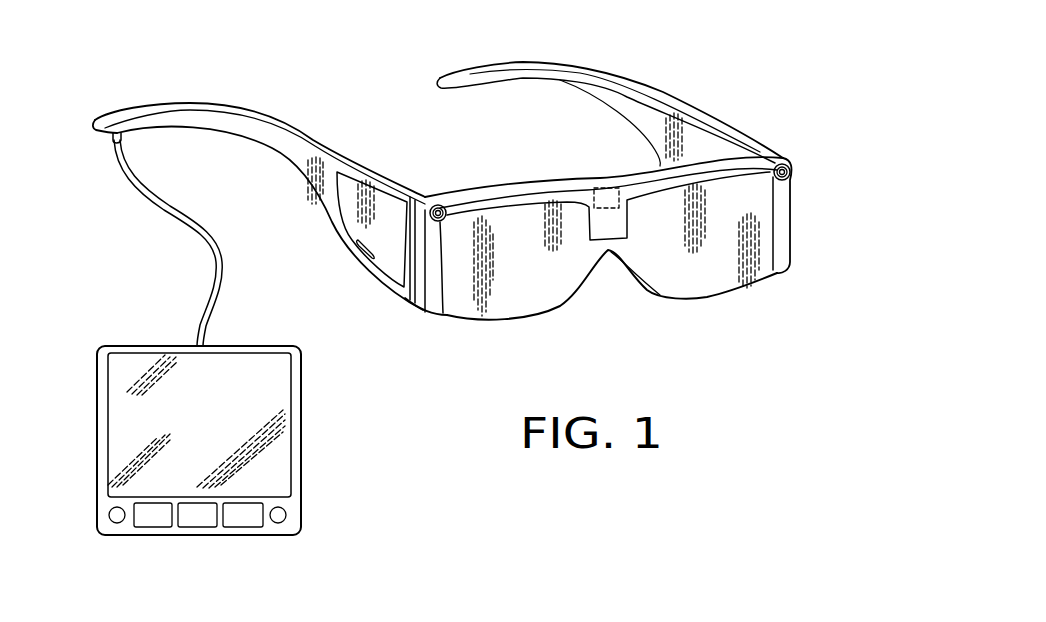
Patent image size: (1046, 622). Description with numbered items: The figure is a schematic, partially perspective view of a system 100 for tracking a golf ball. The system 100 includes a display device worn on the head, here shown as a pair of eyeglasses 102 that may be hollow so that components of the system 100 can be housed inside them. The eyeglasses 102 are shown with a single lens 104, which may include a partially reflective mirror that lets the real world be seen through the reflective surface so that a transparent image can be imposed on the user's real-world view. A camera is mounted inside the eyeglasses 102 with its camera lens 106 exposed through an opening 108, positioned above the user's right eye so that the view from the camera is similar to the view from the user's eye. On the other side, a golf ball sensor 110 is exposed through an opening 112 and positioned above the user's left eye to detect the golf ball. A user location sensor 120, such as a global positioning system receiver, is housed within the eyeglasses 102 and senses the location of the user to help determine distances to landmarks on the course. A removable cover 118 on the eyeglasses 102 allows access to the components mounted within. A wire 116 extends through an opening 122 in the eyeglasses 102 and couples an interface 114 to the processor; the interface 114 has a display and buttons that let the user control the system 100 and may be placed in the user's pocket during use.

The system 100 is at (313, 54).
The eyeglasses 102 is at (513, 182).
The lens 104 is at (690, 283).
The camera lens 106 is at (440, 222).
The opening 108 is at (433, 203).
The golf ball sensor 110 is at (797, 183).
The opening 112 is at (778, 163).
The interface 114 is at (302, 437).
The wire 116 is at (208, 282).
The removable cover 118 is at (392, 243).
The user location sensor 120 is at (600, 180).
The opening 122 is at (114, 140).